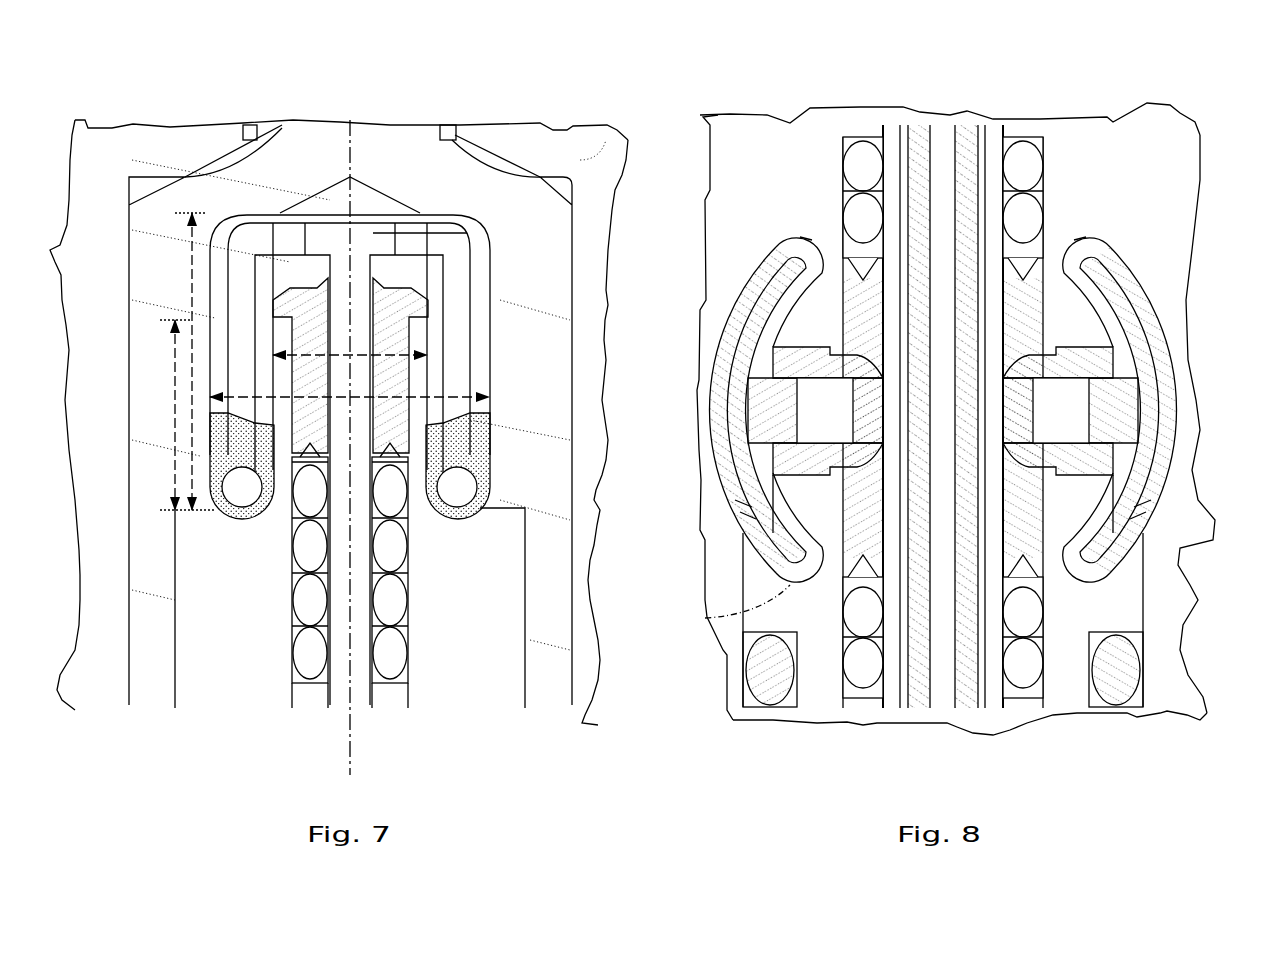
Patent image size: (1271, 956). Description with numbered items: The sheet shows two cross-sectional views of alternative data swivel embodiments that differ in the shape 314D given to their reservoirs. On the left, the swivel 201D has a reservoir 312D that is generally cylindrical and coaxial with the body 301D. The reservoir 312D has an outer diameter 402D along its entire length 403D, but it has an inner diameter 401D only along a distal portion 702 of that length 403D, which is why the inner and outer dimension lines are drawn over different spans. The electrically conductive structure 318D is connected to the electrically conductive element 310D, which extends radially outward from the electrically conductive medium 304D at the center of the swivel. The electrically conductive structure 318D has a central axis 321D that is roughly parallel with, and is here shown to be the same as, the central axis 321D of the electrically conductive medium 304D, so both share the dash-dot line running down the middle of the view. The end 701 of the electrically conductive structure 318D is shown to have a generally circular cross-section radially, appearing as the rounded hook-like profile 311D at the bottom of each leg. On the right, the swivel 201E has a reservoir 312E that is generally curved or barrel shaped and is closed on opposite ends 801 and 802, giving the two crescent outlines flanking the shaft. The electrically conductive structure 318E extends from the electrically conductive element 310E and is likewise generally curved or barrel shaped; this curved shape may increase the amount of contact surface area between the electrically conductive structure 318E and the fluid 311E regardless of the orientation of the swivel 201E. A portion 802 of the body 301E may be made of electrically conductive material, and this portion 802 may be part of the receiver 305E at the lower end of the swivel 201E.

In FIG. 7, the swivel 201D is at (295, 115).
In FIG. 7, the reservoir 312D is at (415, 193).
In FIG. 7, the body 301D is at (595, 158).
In FIG. 7, the length 403D is at (170, 297).
In FIG. 7, the electrically conductive 310D is at (467, 233).
In FIG. 7, the shape 314D is at (578, 335).
In FIG. 7, the electrically conductive structure 318D is at (457, 315).
In FIG. 7, the inner diameter 401D is at (350, 357).
In FIG. 7, the outer diameter 402D is at (350, 397).
In FIG. 7, the hook 311D is at (478, 463).
In FIG. 7, the end 701 is at (456, 490).
In FIG. 7, the distal portion 702 is at (166, 455).
In FIG. 7, the electrically conductive medium 304D is at (392, 693).
In FIG. 7, the central axis 321D is at (348, 733).
In FIG. 8, the body 301E is at (1081, 92).
In FIG. 8, the swivel 201E is at (818, 112).
In FIG. 8, the end 802 is at (778, 207).
In FIG. 8, the end 801 is at (1112, 238).
In FIG. 8, the electrically conductive 310E is at (1017, 432).
In FIG. 8, the electrically conductive structure 318E is at (746, 425).
In FIG. 8, the fluid 311E is at (786, 580).
In FIG. 8, the reservoir 312E is at (1178, 497).
In FIG. 8, the receiver 305E is at (1163, 722).